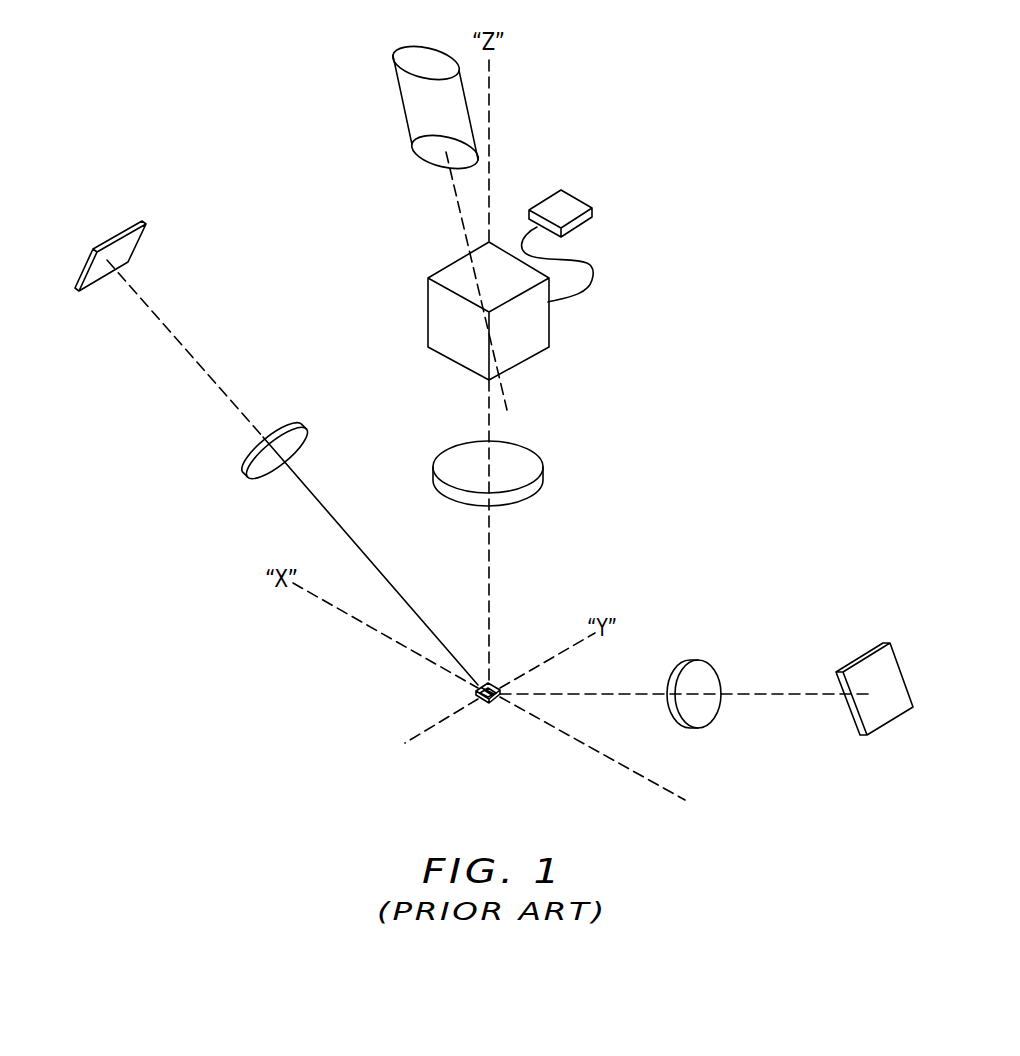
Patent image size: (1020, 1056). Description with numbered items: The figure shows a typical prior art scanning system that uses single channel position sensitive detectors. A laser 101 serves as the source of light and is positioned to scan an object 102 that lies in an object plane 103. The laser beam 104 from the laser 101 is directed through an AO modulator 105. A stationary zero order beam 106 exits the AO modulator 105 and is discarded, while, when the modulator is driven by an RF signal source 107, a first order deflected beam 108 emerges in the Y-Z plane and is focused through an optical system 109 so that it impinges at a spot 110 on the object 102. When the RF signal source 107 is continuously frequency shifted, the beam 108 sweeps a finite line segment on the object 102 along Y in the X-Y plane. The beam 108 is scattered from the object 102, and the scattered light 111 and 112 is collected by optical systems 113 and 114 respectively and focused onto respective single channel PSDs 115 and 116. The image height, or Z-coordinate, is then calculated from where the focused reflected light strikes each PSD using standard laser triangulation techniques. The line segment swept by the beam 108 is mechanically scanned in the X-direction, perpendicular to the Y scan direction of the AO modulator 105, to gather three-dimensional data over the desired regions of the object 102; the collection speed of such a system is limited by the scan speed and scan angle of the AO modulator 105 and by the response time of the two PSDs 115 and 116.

The laser 101 is at (412, 50).
The object 102 is at (489, 705).
The object plane 103 is at (670, 797).
The laser beam 104 is at (463, 227).
The AO modulator 105 is at (428, 328).
The stationary zero order beam 106 is at (500, 388).
The RF signal source 107 is at (595, 208).
The first order deflected beam 108 is at (487, 550).
The optical system 109 is at (433, 472).
The spot 110 is at (477, 693).
The scattered light 111 is at (607, 694).
The scattered light 112 is at (375, 563).
The optical system 113 is at (723, 680).
The optical system 114 is at (270, 437).
The single channel PSD 115 is at (857, 660).
The single channel PSD 116 is at (88, 262).